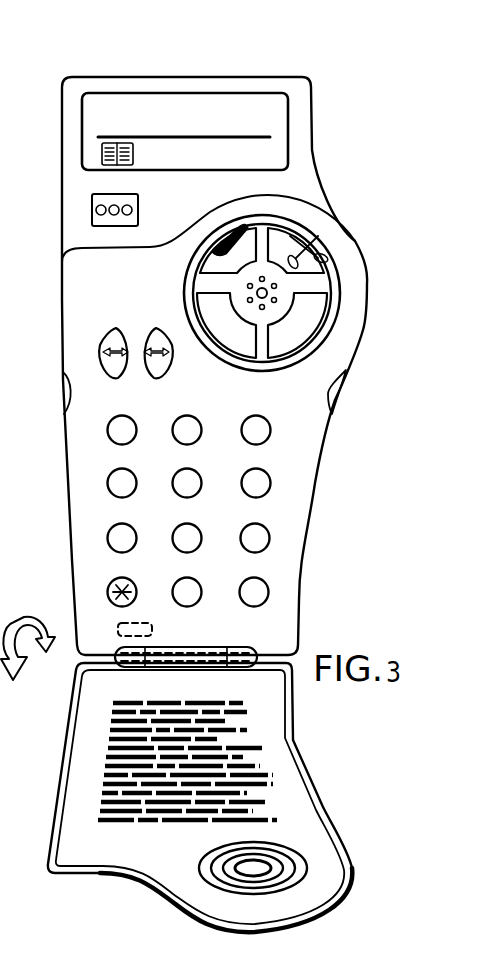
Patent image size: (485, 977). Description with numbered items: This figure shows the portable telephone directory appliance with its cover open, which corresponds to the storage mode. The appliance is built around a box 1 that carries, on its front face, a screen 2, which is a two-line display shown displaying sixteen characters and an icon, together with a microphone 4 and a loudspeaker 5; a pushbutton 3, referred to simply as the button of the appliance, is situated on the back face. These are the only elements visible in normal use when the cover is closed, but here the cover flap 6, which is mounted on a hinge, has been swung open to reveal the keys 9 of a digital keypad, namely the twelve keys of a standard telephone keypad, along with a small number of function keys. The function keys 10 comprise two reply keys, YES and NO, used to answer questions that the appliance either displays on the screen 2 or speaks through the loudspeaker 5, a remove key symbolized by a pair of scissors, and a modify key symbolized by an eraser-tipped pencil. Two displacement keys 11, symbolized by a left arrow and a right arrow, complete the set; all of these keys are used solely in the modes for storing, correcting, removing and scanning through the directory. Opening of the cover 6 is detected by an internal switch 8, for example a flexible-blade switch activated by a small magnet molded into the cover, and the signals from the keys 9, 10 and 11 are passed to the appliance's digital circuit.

The box 1 is at (308, 178).
The screen 2 is at (219, 100).
The pushbutton 3 is at (1, 922).
The microphone 4 is at (92, 218).
The loudspeaker 5 is at (277, 295).
The cover 6 is at (297, 820).
The internal switch 8 is at (116, 630).
The keys 9 is at (270, 481).
The keys 10 is at (320, 272).
The keys 11 is at (110, 334).